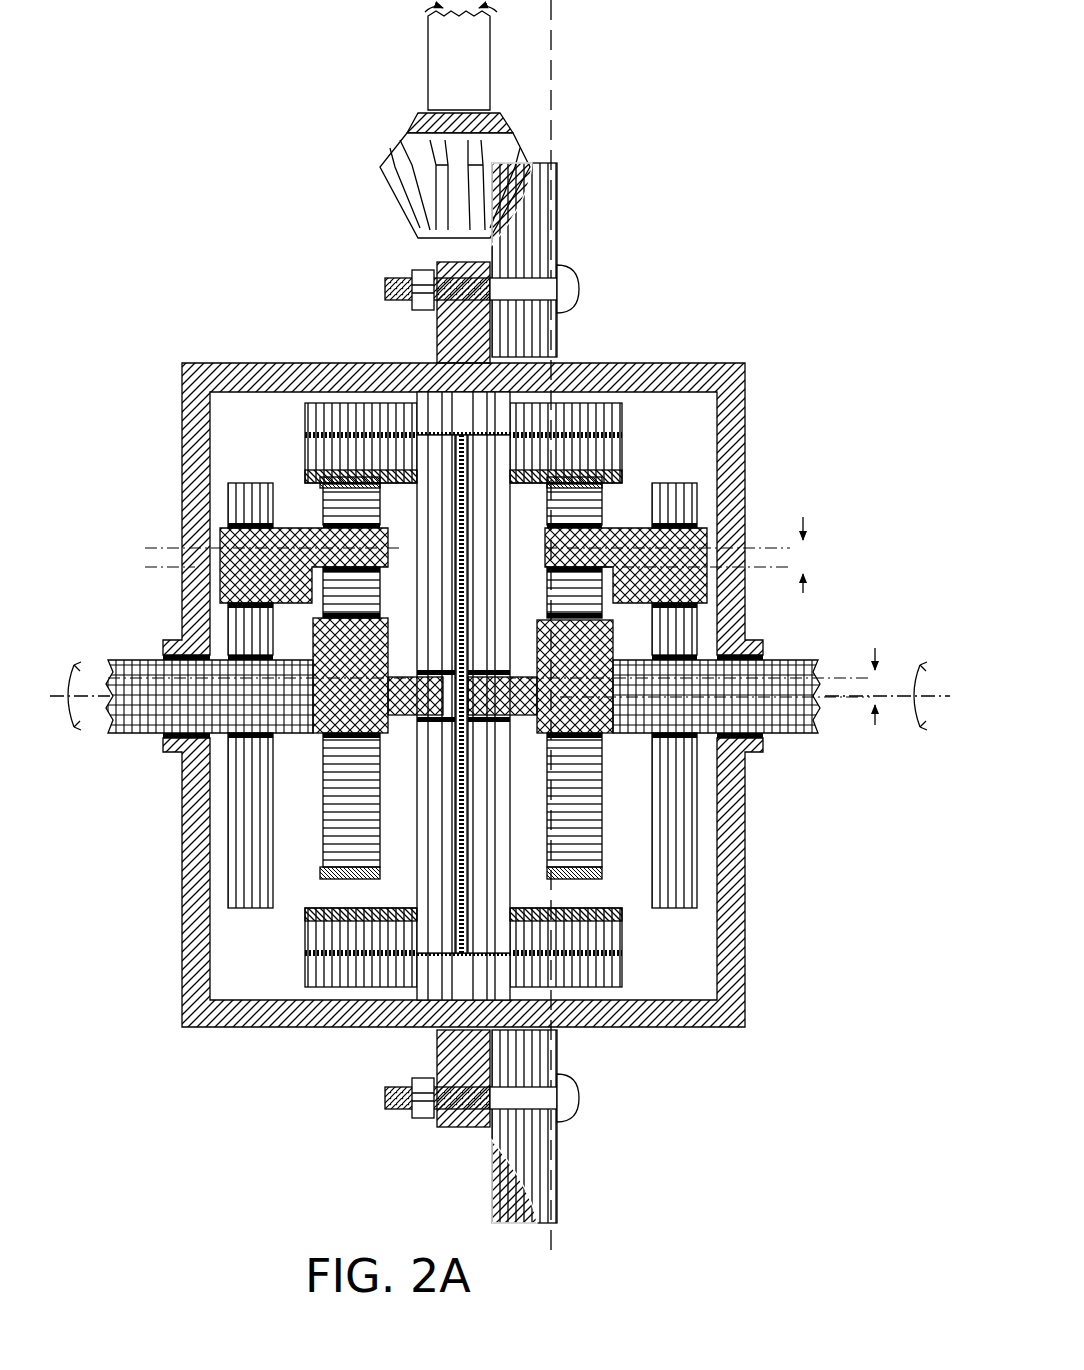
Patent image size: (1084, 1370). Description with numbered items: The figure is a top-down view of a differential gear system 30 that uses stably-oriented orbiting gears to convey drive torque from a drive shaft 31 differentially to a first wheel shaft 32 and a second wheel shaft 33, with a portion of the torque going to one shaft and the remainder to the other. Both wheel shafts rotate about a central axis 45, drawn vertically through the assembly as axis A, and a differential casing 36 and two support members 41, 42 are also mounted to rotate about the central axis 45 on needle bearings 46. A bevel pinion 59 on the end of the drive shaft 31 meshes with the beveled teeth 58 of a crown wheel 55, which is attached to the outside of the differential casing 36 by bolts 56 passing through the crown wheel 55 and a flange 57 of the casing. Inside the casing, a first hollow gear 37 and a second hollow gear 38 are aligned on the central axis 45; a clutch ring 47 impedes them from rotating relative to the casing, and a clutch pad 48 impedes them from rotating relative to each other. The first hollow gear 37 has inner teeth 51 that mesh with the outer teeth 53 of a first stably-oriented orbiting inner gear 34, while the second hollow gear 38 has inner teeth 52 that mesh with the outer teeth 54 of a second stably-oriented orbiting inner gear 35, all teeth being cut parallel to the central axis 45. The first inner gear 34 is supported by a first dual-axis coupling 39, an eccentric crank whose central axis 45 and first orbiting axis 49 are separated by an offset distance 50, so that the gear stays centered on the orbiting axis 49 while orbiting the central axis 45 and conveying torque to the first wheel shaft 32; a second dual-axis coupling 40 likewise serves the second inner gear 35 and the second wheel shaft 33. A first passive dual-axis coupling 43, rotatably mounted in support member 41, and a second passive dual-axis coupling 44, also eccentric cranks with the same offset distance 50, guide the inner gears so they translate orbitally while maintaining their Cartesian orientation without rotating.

The differential gear system 30 is at (237, 282).
The drive shaft 31 is at (428, 68).
The first wheel shaft 32 is at (815, 659).
The second wheel shaft 33 is at (130, 659).
The first stably-oriented orbiting inner gear 34 is at (586, 513).
The second stably-oriented orbiting inner gear 35 is at (363, 513).
The differential casing 36 is at (300, 363).
The first hollow gear 37 is at (500, 479).
The second hollow gear 38 is at (449, 479).
The first dual-axis coupling 39 is at (586, 657).
The second dual-axis coupling 40 is at (362, 657).
The support member 41 is at (686, 811).
The support member 42 is at (262, 811).
The first passive dual-axis coupling 43 is at (642, 593).
The second passive dual-axis coupling 44 is at (300, 593).
The central axis 45 is at (825, 706).
The needle bearings 46 is at (651, 528).
The clutch ring 47 is at (473, 421).
The clutch pad 48 is at (467, 830).
The first orbiting axis 49 is at (826, 674).
The offset distance 50 is at (516, 621).
The inner teeth 51 is at (622, 477).
The inner teeth 52 is at (305, 477).
The outer teeth 53 is at (602, 486).
The outer teeth 54 is at (322, 486).
The crown wheel 55 is at (557, 232).
The bolts 56 is at (580, 290).
The flange 57 is at (475, 331).
The beveled teeth 58 is at (520, 182).
The bevel pinion 59 is at (388, 210).
The axis A is at (550, 644).